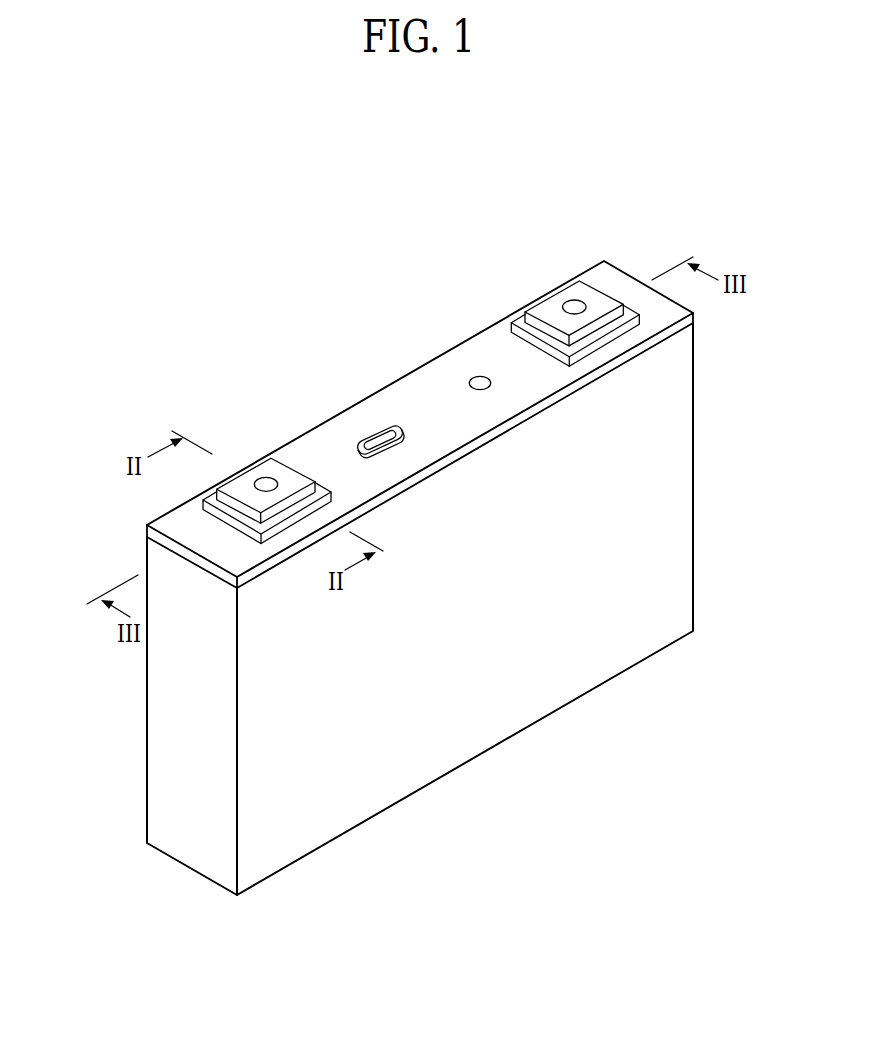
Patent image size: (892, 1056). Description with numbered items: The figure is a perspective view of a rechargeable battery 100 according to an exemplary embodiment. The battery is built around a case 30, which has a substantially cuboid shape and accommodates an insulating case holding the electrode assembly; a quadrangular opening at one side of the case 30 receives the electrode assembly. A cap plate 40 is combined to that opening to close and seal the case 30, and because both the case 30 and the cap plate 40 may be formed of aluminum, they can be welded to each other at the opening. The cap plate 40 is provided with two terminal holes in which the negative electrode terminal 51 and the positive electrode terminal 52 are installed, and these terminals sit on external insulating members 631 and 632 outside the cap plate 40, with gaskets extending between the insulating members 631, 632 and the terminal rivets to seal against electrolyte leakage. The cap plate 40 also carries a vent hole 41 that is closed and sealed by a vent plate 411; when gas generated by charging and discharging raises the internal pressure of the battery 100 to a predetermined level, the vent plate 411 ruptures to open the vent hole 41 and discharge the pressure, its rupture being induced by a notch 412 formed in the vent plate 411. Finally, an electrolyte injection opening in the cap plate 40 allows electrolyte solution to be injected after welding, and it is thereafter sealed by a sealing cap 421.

The rechargeable battery 100 is at (317, 293).
The case 30 is at (716, 519).
The cap plate 40 is at (423, 393).
The vent hole 41 is at (357, 443).
The vent plate 411 is at (369, 437).
The notch 412 is at (382, 427).
The sealing cap 421 is at (479, 376).
The negative electrode terminal 51 is at (250, 449).
The positive electrode terminal 52 is at (553, 271).
The external insulating member 631 is at (213, 512).
The external insulating member 632 is at (518, 332).